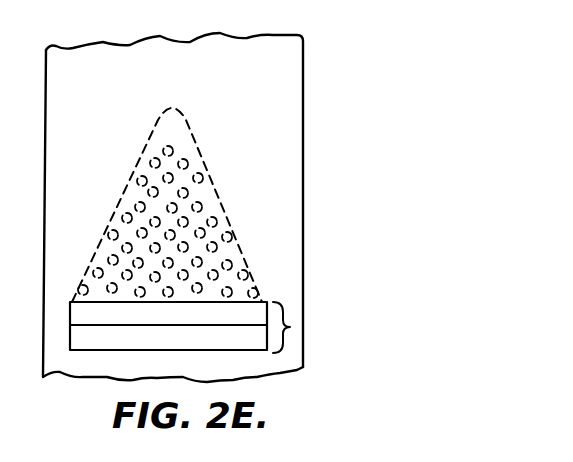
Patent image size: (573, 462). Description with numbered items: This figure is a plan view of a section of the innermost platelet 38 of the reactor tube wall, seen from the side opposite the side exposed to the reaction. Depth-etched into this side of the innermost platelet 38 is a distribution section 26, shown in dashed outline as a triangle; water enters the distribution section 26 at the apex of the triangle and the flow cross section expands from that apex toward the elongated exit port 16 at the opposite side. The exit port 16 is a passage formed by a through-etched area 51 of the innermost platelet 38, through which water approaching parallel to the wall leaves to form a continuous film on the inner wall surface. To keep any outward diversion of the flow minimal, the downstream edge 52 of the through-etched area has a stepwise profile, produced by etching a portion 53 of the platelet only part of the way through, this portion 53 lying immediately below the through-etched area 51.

The innermost platelet 38 is at (303, 88).
The distribution section 26 is at (178, 131).
The through-etched area 51 is at (175, 310).
The downstream edge 52 is at (202, 325).
The partially etched portion 53 is at (213, 340).
The exit port 16 is at (290, 327).